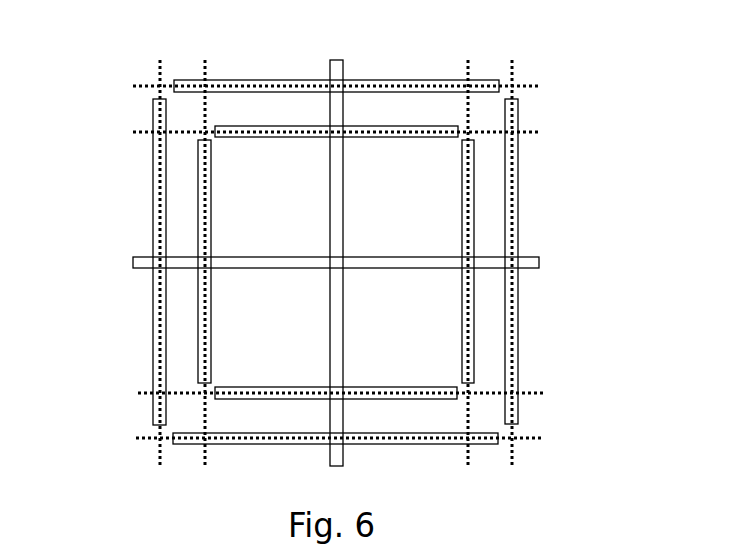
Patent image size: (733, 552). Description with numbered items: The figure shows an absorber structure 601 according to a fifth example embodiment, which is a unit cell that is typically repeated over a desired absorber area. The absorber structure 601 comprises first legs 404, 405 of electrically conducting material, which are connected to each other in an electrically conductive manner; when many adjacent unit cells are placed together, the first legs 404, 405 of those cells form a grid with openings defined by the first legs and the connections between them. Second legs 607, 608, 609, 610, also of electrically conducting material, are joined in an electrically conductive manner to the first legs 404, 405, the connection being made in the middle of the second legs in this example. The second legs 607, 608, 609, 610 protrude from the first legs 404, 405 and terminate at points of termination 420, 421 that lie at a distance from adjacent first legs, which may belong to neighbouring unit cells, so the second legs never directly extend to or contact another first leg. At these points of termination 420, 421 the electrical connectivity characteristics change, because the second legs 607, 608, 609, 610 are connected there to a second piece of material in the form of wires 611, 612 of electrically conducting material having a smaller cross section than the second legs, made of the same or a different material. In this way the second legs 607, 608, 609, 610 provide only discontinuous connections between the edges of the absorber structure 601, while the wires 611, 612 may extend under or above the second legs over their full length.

The absorber structure 601 is at (707, 100).
The second leg 607 is at (193, 80).
The second leg 608 is at (284, 127).
The first leg 405 is at (343, 67).
The first leg 404 is at (540, 262).
The second leg 609 is at (153, 205).
The second leg 610 is at (199, 324).
The wire 611 is at (138, 394).
The point of termination 421 is at (153, 424).
The wire 612 is at (160, 459).
The point of termination 420 is at (217, 393).